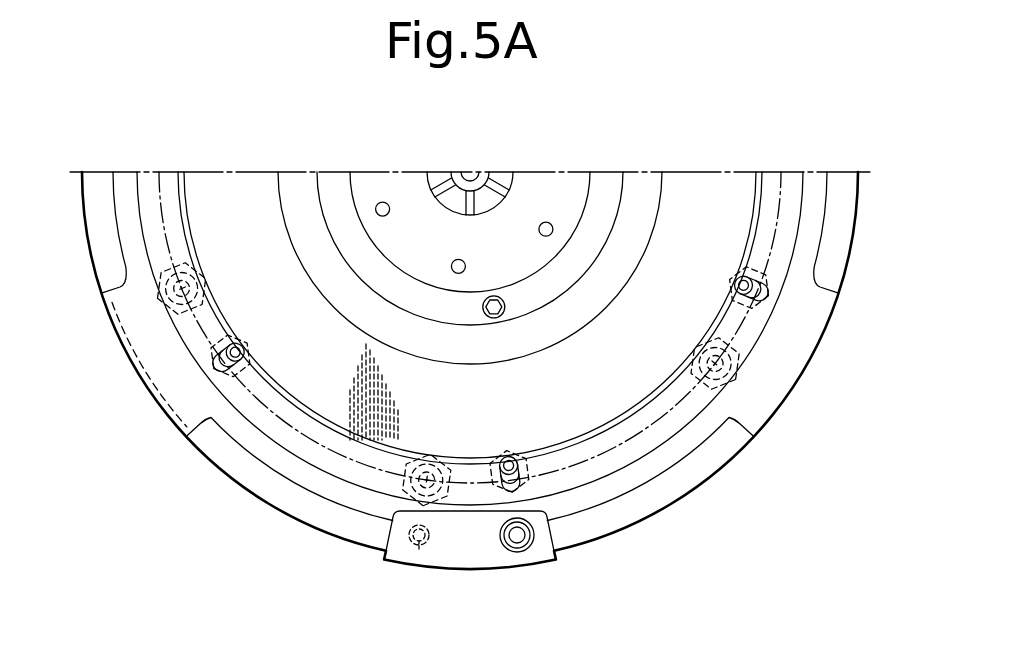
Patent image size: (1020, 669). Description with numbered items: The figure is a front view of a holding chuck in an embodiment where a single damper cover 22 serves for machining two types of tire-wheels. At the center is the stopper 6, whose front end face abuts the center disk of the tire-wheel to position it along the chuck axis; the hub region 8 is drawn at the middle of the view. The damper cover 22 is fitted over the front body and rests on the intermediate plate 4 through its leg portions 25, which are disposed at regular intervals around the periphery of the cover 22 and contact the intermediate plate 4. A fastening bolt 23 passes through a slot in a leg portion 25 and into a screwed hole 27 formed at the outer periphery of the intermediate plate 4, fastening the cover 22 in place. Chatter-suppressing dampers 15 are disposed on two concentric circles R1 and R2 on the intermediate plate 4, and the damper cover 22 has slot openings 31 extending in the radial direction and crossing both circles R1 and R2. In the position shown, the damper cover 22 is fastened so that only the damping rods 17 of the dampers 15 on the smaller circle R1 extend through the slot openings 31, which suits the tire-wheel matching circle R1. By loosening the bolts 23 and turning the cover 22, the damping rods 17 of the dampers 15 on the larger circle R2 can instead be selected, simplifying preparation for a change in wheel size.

The intermediate plate 4 is at (686, 485).
The stopper 6 is at (546, 178).
The hub 8 is at (437, 178).
The chatter-suppressing damper 15 is at (712, 350).
The damping rod 17 is at (740, 276).
The damper cover 22 is at (233, 192).
The fastening bolt 23 is at (513, 553).
The leg portion 25 is at (458, 553).
The screwed hole 27 is at (414, 556).
The slot opening 31 is at (768, 296).
The smaller circle R1 is at (283, 432).
The larger circle R2 is at (337, 450).